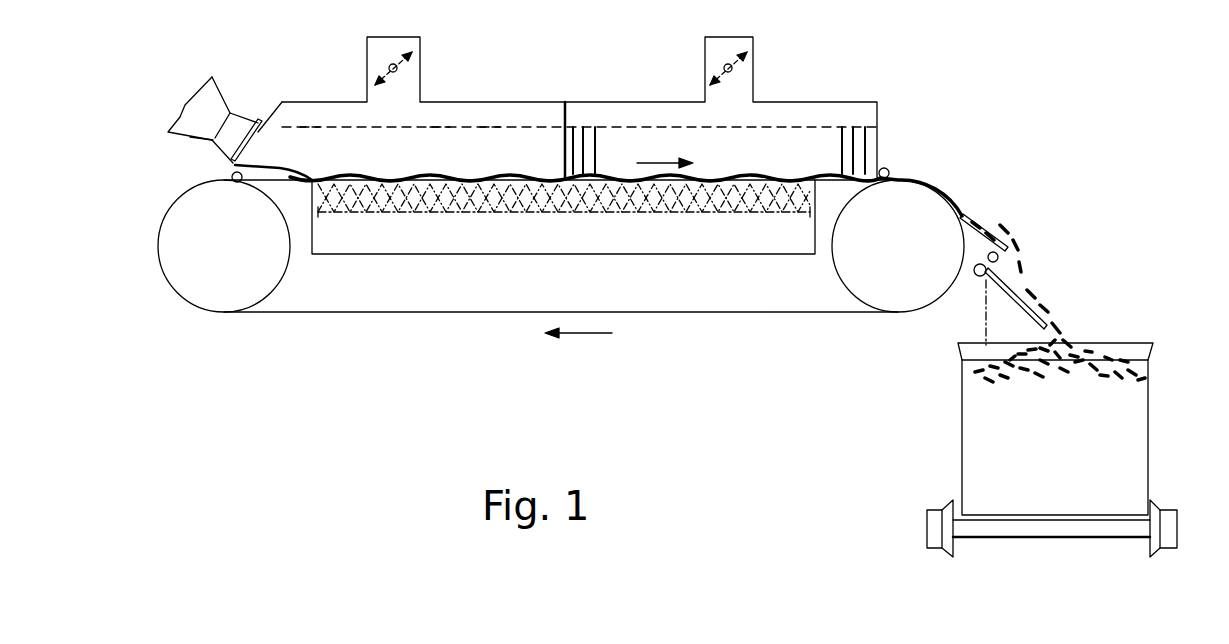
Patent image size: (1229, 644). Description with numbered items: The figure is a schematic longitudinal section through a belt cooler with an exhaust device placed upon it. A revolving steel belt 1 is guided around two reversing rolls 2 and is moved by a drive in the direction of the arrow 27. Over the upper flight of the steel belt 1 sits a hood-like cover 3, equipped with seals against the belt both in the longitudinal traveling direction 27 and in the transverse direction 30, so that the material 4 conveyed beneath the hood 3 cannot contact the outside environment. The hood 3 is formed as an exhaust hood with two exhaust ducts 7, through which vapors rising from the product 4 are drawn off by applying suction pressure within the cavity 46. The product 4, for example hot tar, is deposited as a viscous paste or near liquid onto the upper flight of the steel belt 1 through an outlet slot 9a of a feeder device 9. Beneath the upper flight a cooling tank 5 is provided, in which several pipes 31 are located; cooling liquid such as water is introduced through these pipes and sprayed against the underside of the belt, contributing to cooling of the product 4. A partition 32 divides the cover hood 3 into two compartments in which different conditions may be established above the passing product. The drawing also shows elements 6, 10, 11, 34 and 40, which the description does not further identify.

The revolving steel belt 1 is at (375, 313).
The reversing rolls 2 is at (223, 290).
The hood-like cover 3 is at (515, 102).
The material 4 is at (335, 140).
The cooling tank 5 is at (665, 242).
The heating elements 6 is at (517, 198).
The exhaust ducts 7 is at (407, 82).
The feeder device 9 is at (215, 108).
The outlet slot 9a is at (268, 162).
The scraper 10 is at (986, 243).
The collecting container 11 is at (1115, 445).
The arrow 27 is at (657, 163).
The transverse direction 30 is at (218, 170).
The pipes 31 is at (380, 215).
The partition 32 is at (504, 141).
The partition wall 34 is at (622, 123).
The outlet chamber 40 is at (778, 153).
The cavity 46 is at (453, 153).